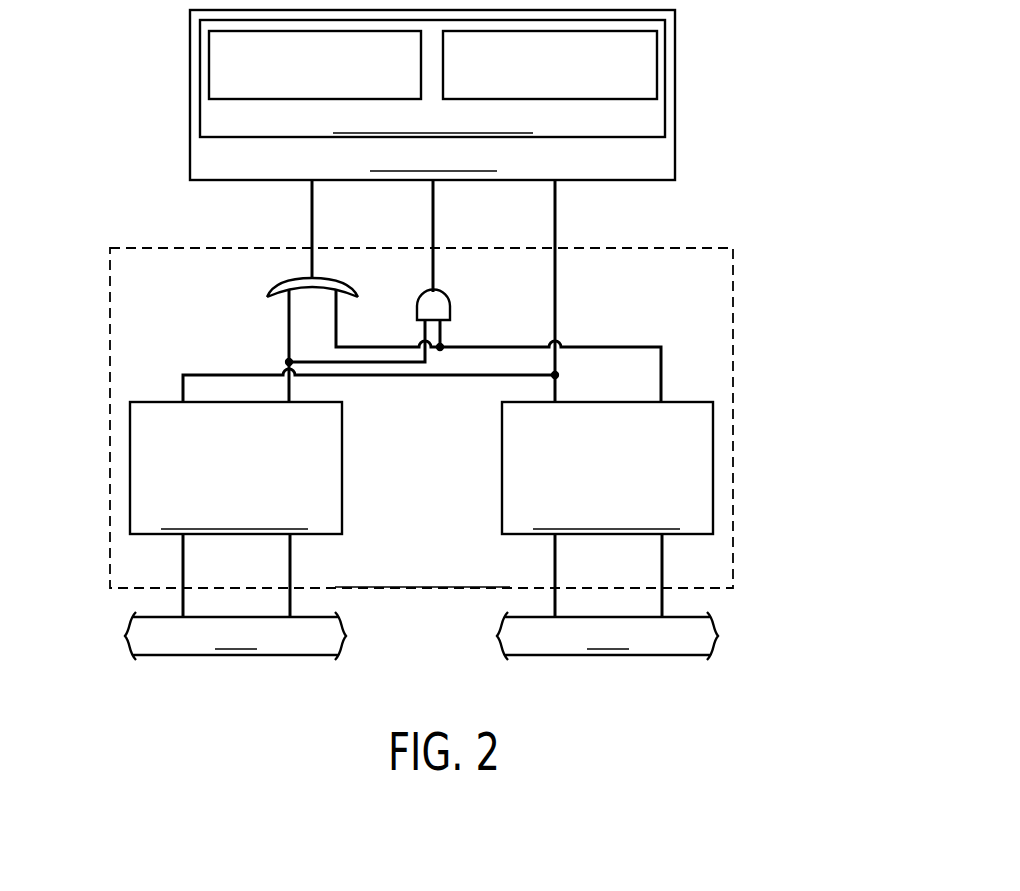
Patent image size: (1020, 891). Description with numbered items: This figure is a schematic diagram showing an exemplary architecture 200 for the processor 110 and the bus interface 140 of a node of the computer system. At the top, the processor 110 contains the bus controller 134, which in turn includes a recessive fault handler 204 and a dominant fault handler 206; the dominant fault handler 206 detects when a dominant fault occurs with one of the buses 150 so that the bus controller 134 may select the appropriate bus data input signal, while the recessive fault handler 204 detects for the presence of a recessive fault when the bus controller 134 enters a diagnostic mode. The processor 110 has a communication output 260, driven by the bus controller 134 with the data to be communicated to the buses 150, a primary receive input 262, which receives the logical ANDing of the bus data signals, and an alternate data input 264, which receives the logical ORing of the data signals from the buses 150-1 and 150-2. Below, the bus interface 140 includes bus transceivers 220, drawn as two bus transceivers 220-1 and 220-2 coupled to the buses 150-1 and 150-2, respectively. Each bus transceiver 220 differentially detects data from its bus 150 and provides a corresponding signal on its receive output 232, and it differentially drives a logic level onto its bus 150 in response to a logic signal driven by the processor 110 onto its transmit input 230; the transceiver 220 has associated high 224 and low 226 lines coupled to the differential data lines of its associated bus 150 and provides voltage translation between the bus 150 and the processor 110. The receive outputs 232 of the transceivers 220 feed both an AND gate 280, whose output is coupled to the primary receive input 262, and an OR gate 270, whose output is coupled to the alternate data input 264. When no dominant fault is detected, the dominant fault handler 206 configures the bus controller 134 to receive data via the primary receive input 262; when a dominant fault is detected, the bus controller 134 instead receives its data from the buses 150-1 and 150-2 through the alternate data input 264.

The architecture 200 is at (743, 40).
The processor 110 is at (676, 97).
The bus controller 134 is at (200, 80).
The recessive fault handler 204 is at (208, 63).
The dominant fault handler 206 is at (657, 63).
The alternate data input 264 is at (312, 213).
The primary receive input 262 is at (433, 213).
The communication output 260 is at (555, 213).
The bus interface 140 is at (733, 300).
The OR gate 270 is at (280, 283).
The AND gate 280 is at (440, 303).
The receive output 232 is at (612, 346).
The transmit input 230 is at (182, 393).
The bus transceiver 220 is at (130, 468).
The second bus transceiver 220-2 is at (158, 401).
The first bus transceiver 220-1 is at (690, 401).
The high line 224 is at (183, 575).
The low line 226 is at (290, 572).
The bus 150 is at (232, 657).
The second bus 150-2 is at (285, 657).
The first bus 150-1 is at (560, 656).